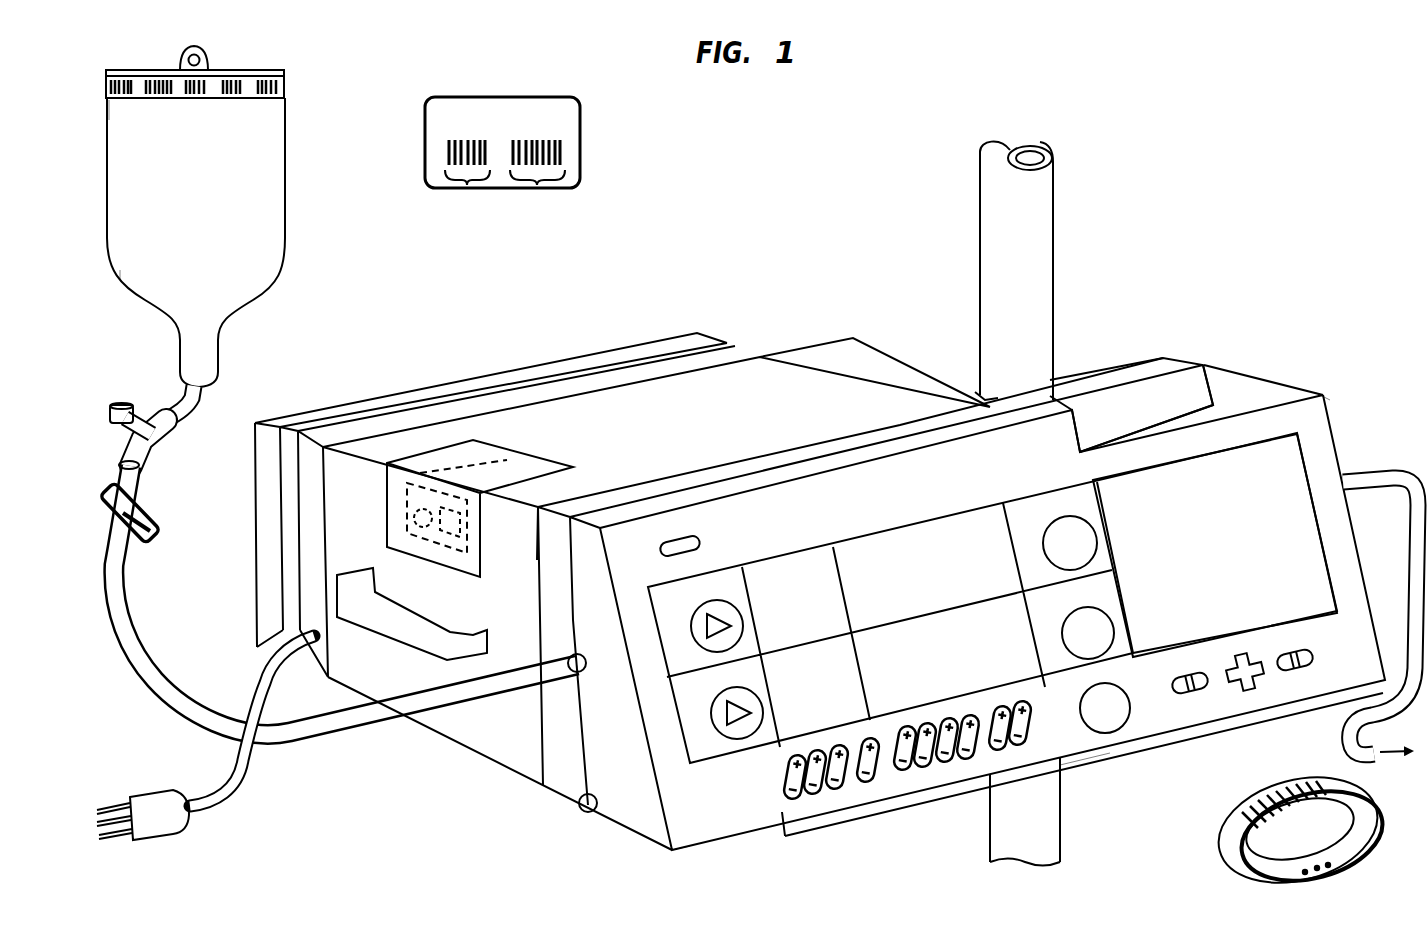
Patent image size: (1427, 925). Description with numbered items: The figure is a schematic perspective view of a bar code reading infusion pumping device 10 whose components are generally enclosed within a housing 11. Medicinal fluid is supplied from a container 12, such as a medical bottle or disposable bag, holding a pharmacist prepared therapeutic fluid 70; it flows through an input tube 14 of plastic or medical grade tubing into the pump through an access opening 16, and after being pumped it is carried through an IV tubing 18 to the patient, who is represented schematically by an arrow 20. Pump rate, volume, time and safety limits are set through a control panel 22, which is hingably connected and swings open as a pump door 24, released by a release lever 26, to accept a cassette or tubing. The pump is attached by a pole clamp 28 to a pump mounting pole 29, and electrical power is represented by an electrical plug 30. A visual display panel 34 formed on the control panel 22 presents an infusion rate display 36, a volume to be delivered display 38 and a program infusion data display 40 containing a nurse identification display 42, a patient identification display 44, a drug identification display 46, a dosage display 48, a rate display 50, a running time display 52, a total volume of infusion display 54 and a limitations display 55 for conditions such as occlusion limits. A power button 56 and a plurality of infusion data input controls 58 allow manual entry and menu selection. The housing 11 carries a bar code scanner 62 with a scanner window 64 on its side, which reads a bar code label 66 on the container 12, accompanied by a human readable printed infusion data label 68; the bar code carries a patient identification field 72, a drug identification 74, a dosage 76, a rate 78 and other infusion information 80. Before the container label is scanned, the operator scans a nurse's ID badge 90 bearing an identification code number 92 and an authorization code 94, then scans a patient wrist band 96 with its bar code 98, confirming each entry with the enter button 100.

The bar code reading infusion pumping device 10 is at (695, 299).
The housing 11 is at (740, 372).
The container 12 is at (286, 205).
The input tube 14 is at (143, 668).
The access opening 16 is at (590, 673).
The IV tubing 18 is at (1412, 500).
The arrow 20 is at (1392, 752).
The control panel 22 is at (904, 468).
The pump door 24 is at (655, 825).
The release lever 26 is at (1128, 372).
The pole clamp 28 is at (985, 393).
The pump mounting pole 29 is at (1052, 210).
The electrical plug 30 is at (165, 826).
The visual display panel 34 is at (811, 522).
The infusion rate display 36 is at (805, 620).
The volume to be delivered display 38 is at (938, 588).
The program infusion data display 40 is at (1205, 522).
The nurse identification display 42 is at (1253, 455).
The patient identification display 44 is at (1258, 455).
The drug identification display 46 is at (1171, 520).
The dosage display 48 is at (1287, 510).
The rate display 50 is at (1187, 543).
The running time display 52 is at (1240, 567).
The total volume of infusion display 54 is at (1180, 647).
The limitations display 55 is at (1180, 660).
The power button 56 is at (698, 534).
The infusion data input controls 58 is at (1083, 762).
The bar code scanner 62 is at (553, 463).
The scanner window 64 is at (443, 533).
The bar code label 66 is at (284, 82).
The human readable printed infusion data label 68 is at (276, 108).
The therapeutic fluid 70 is at (277, 263).
The patient identification field 72 is at (122, 96).
The drug name or identification 74 is at (157, 96).
The dosage 76 is at (194, 96).
The rate 78 is at (233, 96).
The other infusion information 80 is at (270, 73).
The nurse's ID badge 90 is at (581, 122).
The identification code number 92 is at (539, 187).
The authorization code 94 is at (467, 186).
The patient wrist band 96 is at (1356, 858).
The wristband bar code 98 is at (1275, 800).
The enter button 100 is at (1307, 657).